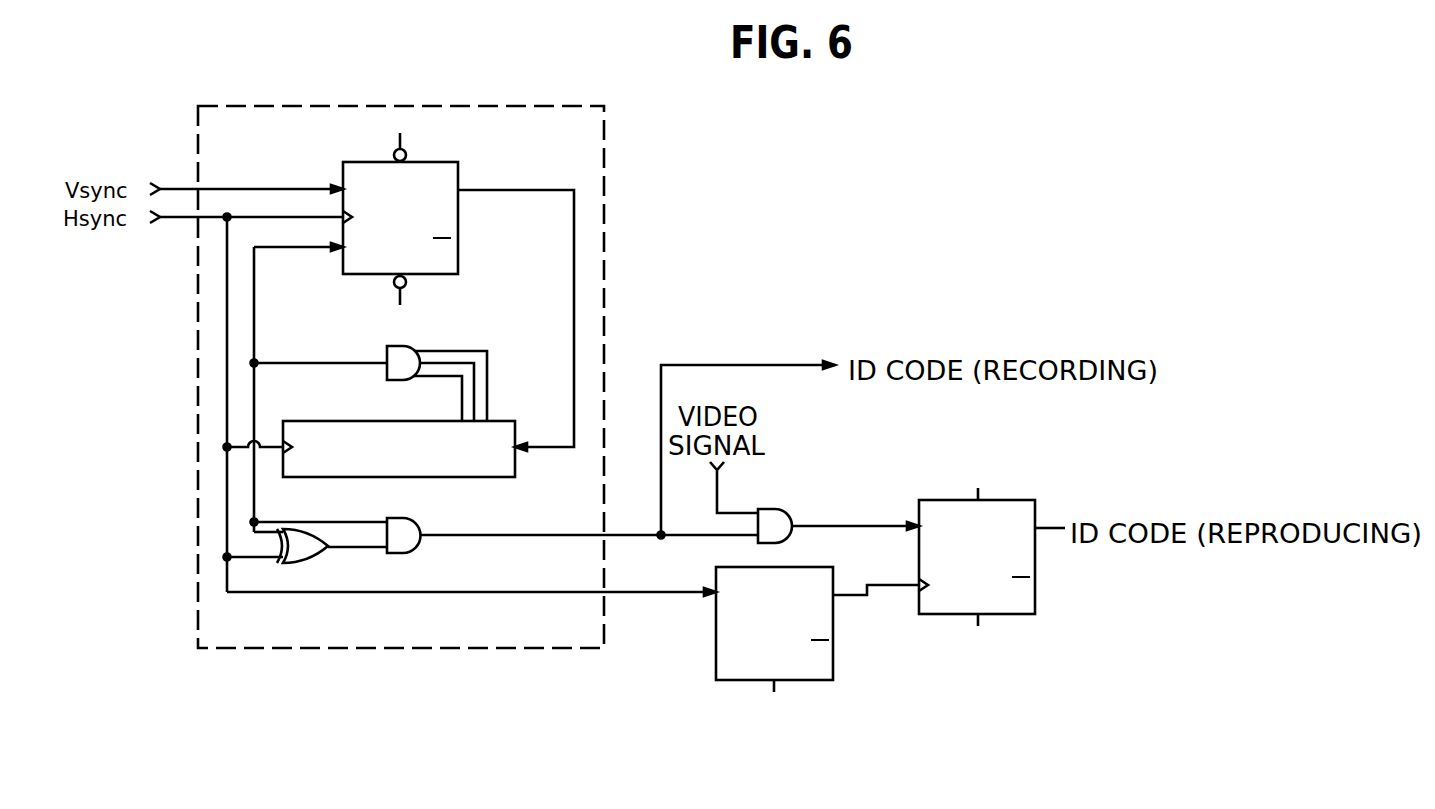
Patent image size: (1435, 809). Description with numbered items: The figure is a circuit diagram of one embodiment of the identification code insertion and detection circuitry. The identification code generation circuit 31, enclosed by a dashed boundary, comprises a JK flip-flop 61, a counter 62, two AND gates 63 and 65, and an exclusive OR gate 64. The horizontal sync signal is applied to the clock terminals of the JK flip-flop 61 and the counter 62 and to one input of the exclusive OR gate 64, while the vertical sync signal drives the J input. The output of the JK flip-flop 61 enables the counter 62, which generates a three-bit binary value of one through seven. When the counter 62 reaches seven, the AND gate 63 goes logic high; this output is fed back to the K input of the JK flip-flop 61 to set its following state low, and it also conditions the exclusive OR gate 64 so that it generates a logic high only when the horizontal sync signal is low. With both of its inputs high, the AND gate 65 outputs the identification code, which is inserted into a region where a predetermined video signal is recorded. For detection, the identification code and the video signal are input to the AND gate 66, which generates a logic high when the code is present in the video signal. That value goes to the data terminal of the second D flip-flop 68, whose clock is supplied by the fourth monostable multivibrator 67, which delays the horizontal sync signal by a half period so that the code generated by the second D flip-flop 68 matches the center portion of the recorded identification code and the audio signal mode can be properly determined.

The identification code generation circuit 31 is at (604, 230).
The JK flip-flop 61 is at (458, 264).
The counter 62 is at (515, 470).
The AND gate 63 is at (410, 346).
The exclusive OR gate 64 is at (290, 564).
The AND gate 65 is at (393, 518).
The AND gate 66 is at (780, 509).
The fourth monostable multivibrator 67 is at (833, 668).
The second D flip-flop 68 is at (1035, 596).